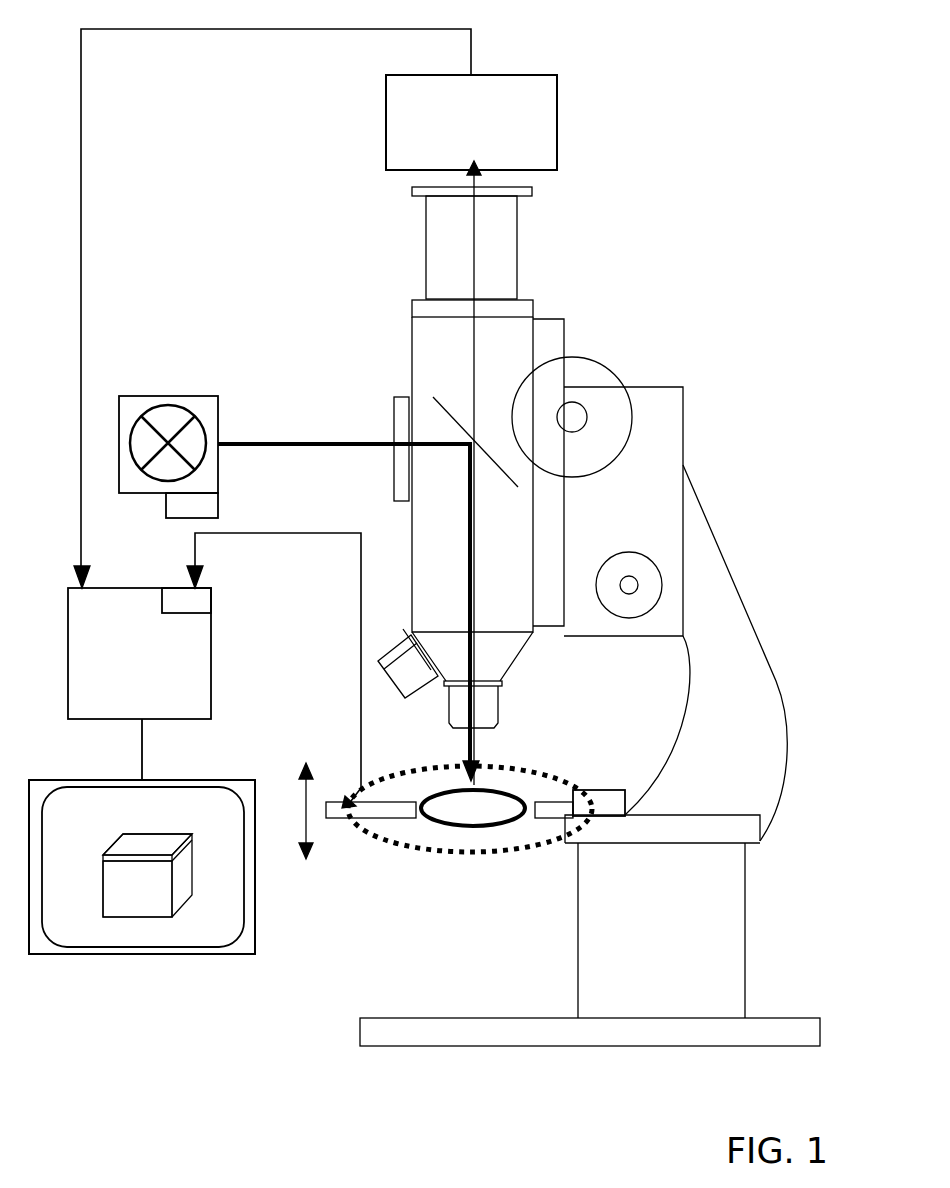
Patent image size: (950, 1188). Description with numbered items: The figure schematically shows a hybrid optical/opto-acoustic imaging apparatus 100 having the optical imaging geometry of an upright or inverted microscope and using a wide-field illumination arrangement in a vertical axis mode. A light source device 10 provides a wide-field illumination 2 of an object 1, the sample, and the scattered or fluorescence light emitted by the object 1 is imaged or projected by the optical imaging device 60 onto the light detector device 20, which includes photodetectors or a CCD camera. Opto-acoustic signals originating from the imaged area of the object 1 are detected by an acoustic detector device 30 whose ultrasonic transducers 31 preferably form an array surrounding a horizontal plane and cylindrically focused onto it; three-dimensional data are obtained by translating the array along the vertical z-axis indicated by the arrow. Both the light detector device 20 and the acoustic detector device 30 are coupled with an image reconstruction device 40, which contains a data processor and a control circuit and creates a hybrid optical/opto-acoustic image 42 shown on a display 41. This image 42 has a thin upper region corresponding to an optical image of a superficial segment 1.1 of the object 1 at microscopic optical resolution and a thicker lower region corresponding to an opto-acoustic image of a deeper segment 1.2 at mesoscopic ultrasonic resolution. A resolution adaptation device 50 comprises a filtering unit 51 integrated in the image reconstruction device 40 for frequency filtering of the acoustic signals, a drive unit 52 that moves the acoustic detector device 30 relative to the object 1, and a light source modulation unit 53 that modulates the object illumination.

The hybrid optical/opto-acoustic imaging apparatus 100 is at (253, 227).
The light detector device 20 is at (481, 120).
The optical imaging device 60 is at (587, 256).
The light source device 10 is at (198, 407).
The light source modulation unit 53 is at (217, 493).
The resolution adaptation device 50 is at (253, 529).
The filtering unit 51 is at (197, 597).
The image reconstruction device 40 is at (149, 663).
The display 41 is at (233, 784).
The hybrid optical/opto-acoustic image 42 is at (171, 923).
The superficial segment 1.1 is at (131, 843).
The deeper segment 1.2 is at (131, 905).
The object 1 is at (418, 818).
The wide-field illumination 2 is at (463, 762).
The acoustic detector device 30 is at (450, 860).
The ultrasonic transducers 31 is at (493, 847).
The drive unit 52 is at (623, 785).